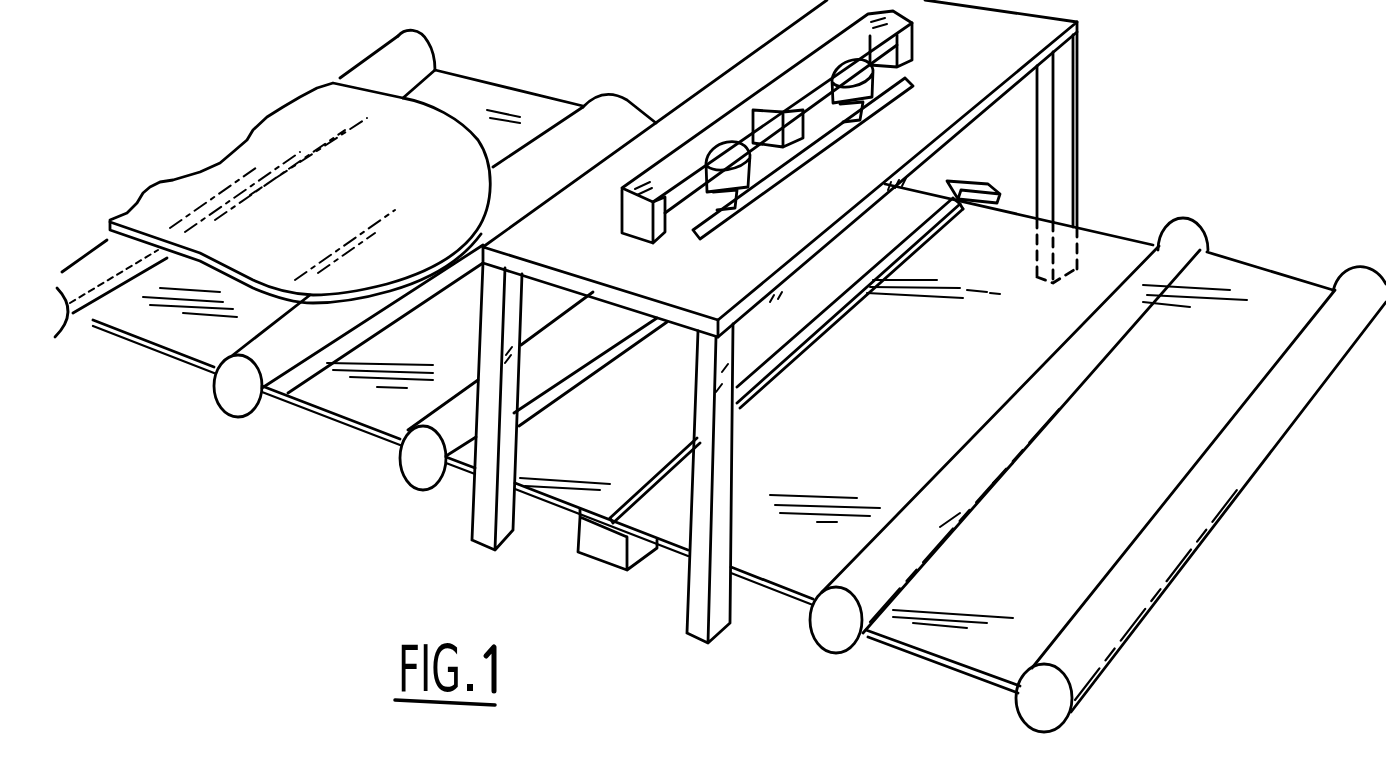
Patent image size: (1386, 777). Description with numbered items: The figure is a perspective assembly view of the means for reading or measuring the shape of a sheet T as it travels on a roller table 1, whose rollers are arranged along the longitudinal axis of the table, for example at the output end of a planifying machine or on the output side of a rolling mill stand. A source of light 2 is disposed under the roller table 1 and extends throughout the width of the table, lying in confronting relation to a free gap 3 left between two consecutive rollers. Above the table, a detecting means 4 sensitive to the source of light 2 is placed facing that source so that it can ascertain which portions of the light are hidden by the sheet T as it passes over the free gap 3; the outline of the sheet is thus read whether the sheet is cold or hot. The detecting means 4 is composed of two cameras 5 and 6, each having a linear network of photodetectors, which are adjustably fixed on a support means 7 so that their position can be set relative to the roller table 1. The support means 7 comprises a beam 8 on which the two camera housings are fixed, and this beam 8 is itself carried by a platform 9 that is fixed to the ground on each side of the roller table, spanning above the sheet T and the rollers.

The roller table 1 is at (1116, 233).
The source of light 2 is at (640, 575).
The free gap 3 is at (652, 477).
The detecting means 4 is at (880, 81).
The camera 5 is at (842, 93).
The camera 6 is at (738, 176).
The support means 7 is at (678, 100).
The beam 8 is at (645, 173).
The platform 9 is at (577, 291).
The sheet T is at (410, 145).